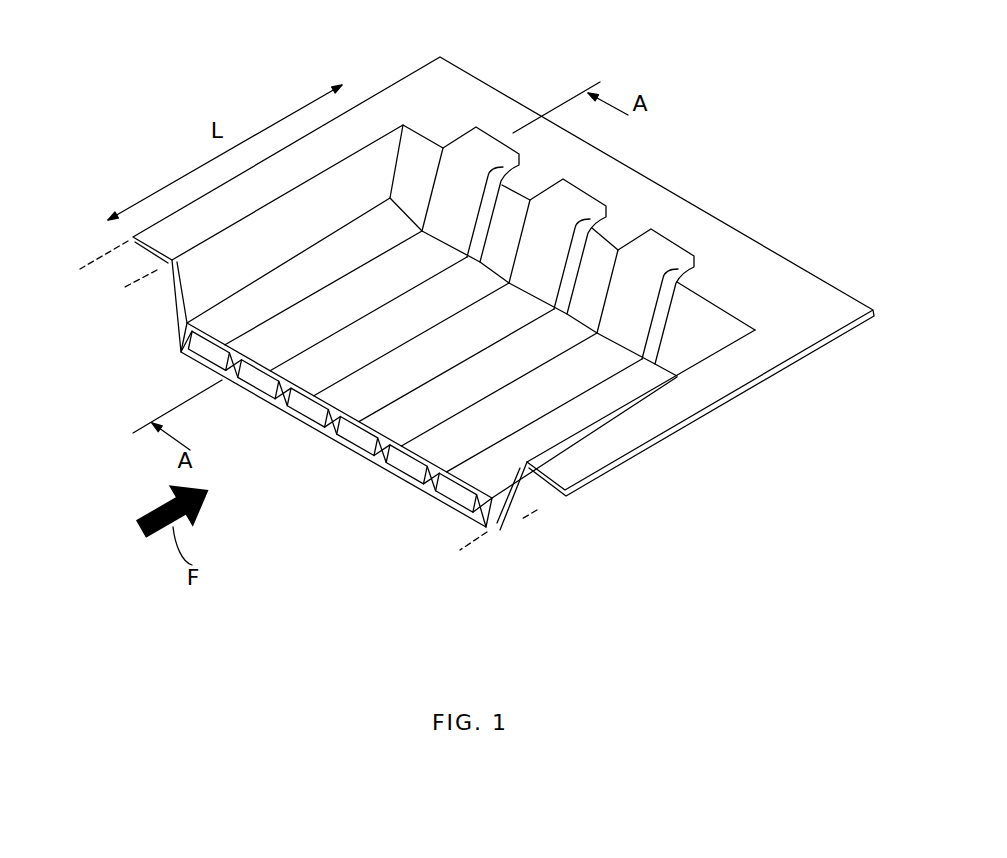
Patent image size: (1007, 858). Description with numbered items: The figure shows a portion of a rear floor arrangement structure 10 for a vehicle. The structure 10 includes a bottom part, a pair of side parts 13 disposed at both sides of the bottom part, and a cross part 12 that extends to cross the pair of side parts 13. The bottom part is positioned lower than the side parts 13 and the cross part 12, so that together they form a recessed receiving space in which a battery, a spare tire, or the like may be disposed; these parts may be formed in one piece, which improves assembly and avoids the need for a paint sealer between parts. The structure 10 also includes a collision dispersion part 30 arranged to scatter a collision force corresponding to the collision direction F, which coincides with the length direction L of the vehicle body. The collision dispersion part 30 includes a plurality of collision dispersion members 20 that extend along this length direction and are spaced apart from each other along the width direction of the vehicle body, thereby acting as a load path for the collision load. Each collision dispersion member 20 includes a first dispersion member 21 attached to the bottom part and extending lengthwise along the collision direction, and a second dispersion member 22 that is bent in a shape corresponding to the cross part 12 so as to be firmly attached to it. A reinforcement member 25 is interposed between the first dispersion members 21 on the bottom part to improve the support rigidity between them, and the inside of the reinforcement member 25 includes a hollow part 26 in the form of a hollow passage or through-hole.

The rear floor arrangement structure 10 is at (495, 123).
The cross part 12 is at (600, 253).
The side part 13 is at (168, 293).
The collision dispersion member 20 is at (243, 386).
The first dispersion member 21 is at (380, 293).
The second dispersion member 22 is at (457, 223).
The reinforcement member 25 is at (207, 333).
The hollow part 26 is at (473, 518).
The collision dispersion part 30 is at (217, 452).